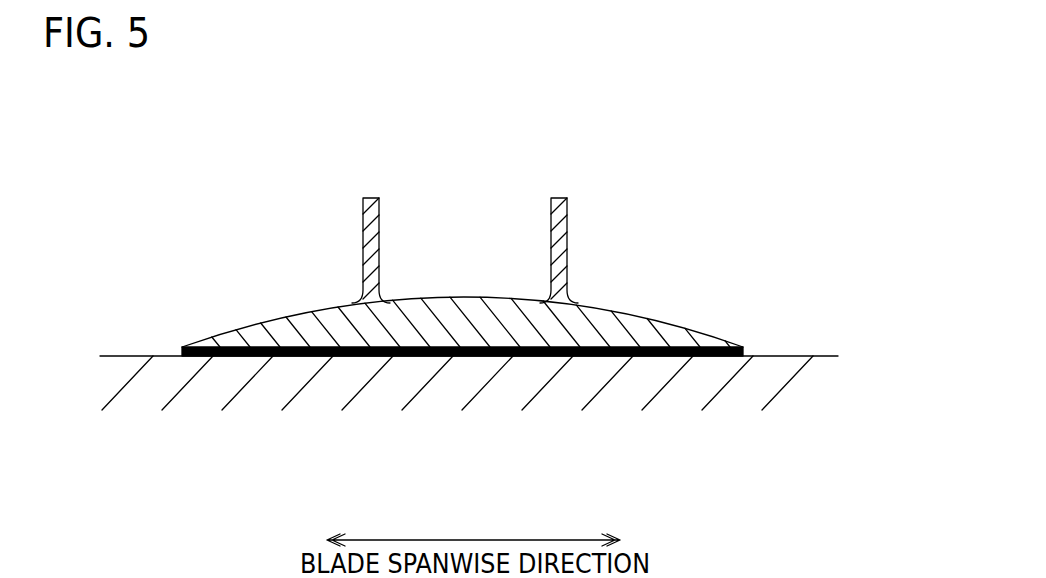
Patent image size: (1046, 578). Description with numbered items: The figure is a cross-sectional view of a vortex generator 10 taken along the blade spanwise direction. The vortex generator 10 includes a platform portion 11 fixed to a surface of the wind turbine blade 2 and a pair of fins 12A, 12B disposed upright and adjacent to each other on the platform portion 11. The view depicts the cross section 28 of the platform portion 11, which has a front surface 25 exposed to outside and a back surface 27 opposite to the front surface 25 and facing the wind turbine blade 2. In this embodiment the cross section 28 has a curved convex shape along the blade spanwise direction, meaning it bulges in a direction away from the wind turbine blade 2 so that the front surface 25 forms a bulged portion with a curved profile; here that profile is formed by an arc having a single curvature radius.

The wind turbine blade 2 is at (798, 357).
The vortex generator 10 is at (258, 208).
The platform portion 11 is at (695, 330).
The fin 12A is at (362, 210).
The fin 12B is at (550, 210).
The front surface 25 is at (642, 316).
The back surface 27 is at (655, 357).
The cross section 28 is at (253, 337).